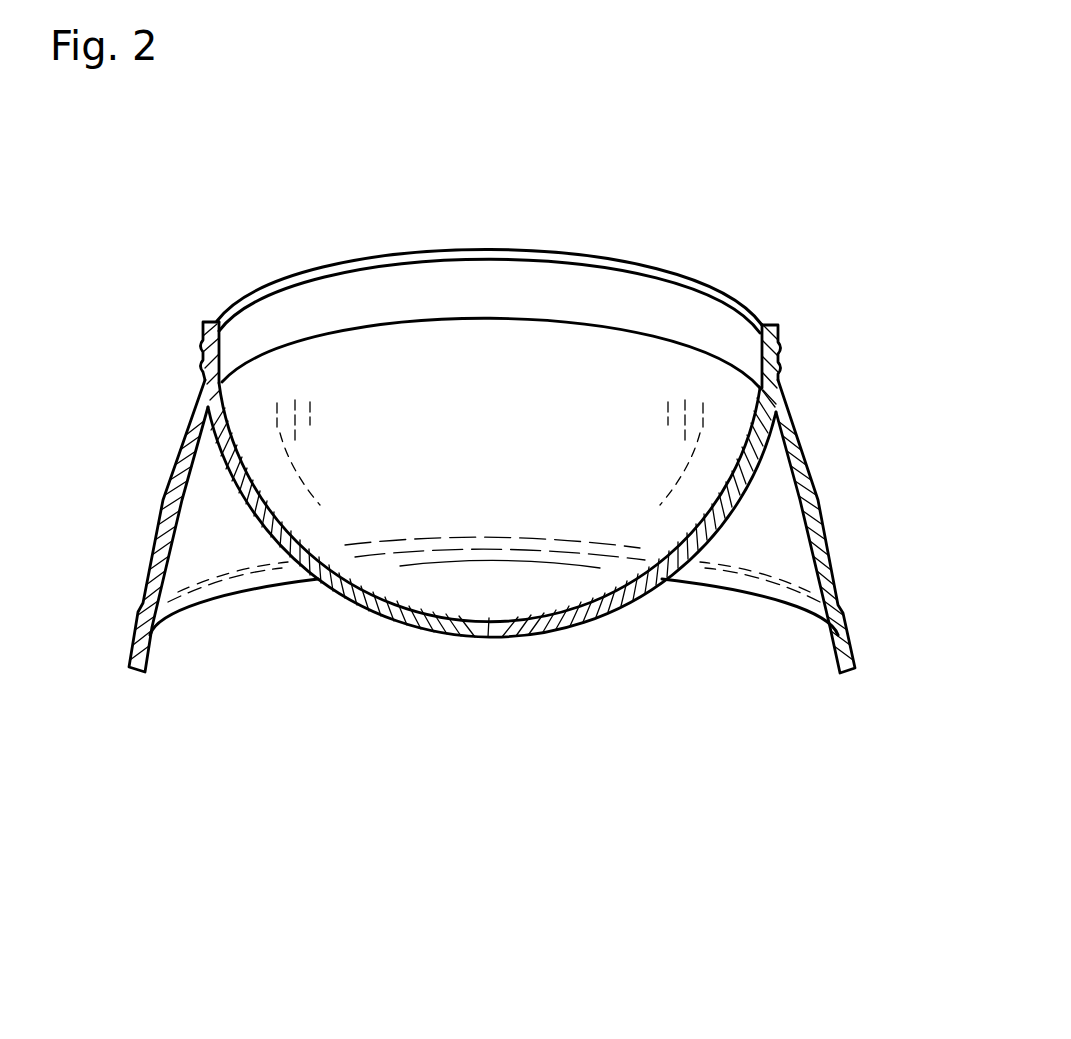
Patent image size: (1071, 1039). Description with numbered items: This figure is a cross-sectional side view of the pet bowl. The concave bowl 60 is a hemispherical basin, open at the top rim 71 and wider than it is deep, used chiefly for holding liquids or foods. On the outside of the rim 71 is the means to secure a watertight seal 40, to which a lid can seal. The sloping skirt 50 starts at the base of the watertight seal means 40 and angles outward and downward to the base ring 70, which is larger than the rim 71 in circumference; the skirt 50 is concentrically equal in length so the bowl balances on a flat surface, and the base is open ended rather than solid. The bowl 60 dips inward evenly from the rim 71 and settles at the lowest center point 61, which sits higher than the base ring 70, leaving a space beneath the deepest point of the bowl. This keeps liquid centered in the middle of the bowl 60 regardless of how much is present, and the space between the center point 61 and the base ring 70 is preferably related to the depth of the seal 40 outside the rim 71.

The means to secure a watertight seal outside of rim 40 is at (203, 340).
The sloping skirt 50 is at (810, 443).
The concave bowl 60 is at (563, 515).
The center point 61 is at (485, 622).
The base ring 70 is at (195, 608).
The rim 71 is at (562, 253).